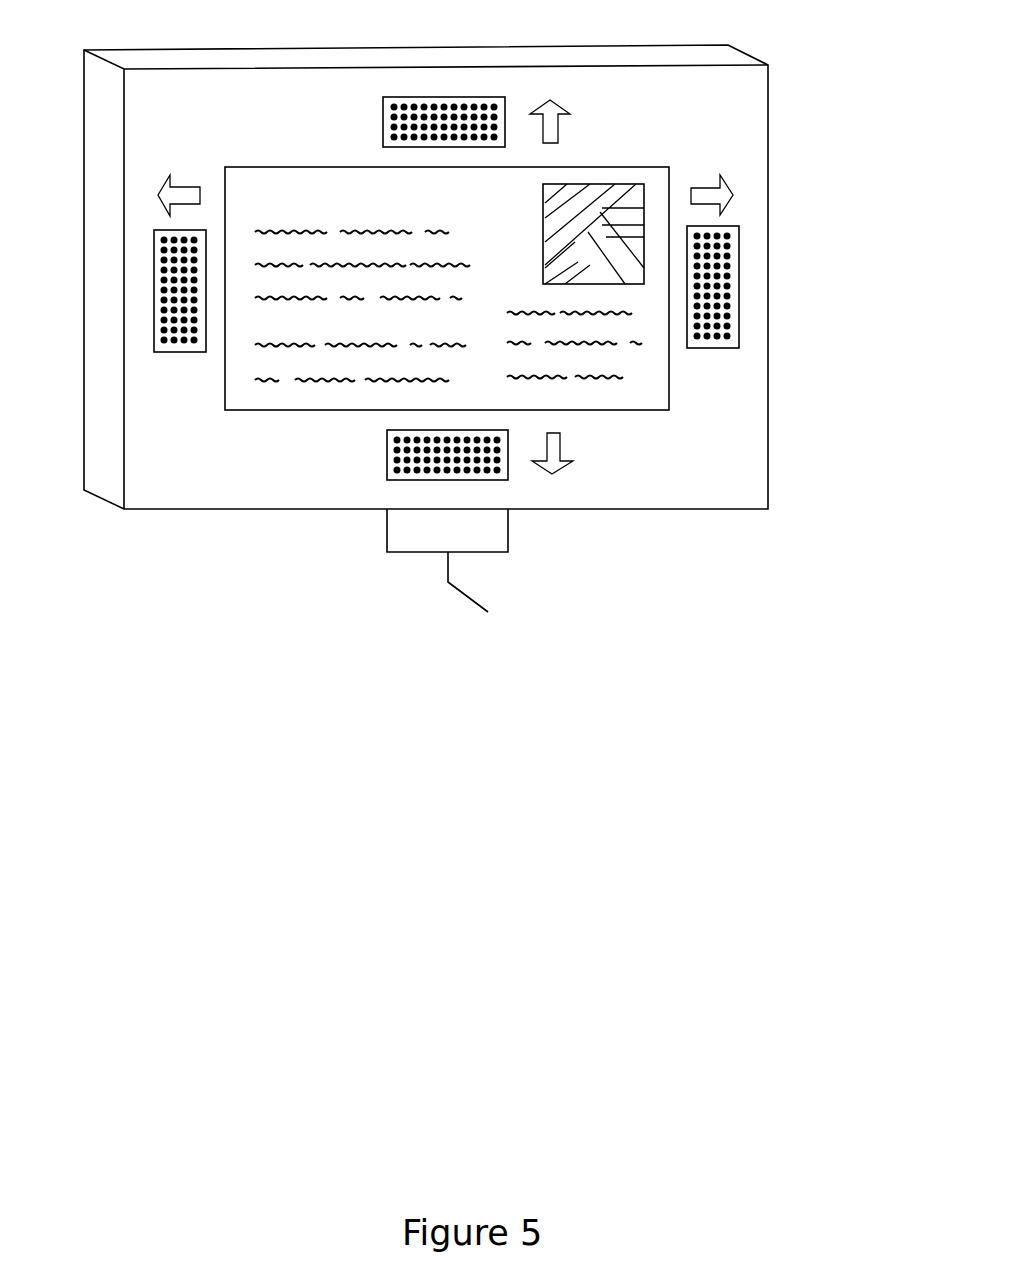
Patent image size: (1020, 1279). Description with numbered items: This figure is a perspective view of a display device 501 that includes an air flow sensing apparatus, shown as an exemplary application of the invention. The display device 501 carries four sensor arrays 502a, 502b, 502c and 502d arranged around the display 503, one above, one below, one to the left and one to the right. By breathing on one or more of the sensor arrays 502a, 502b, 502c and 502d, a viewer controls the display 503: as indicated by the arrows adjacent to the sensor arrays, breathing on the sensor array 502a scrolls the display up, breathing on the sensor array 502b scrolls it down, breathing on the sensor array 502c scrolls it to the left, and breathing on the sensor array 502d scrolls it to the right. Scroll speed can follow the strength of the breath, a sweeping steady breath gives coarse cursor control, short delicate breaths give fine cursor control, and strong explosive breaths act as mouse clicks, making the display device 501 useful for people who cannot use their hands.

The display device 501 is at (770, 435).
The sensor array 502a is at (443, 97).
The sensor array 502b is at (387, 452).
The sensor array 502c is at (154, 272).
The sensor array 502d is at (739, 277).
The display 503 is at (654, 398).